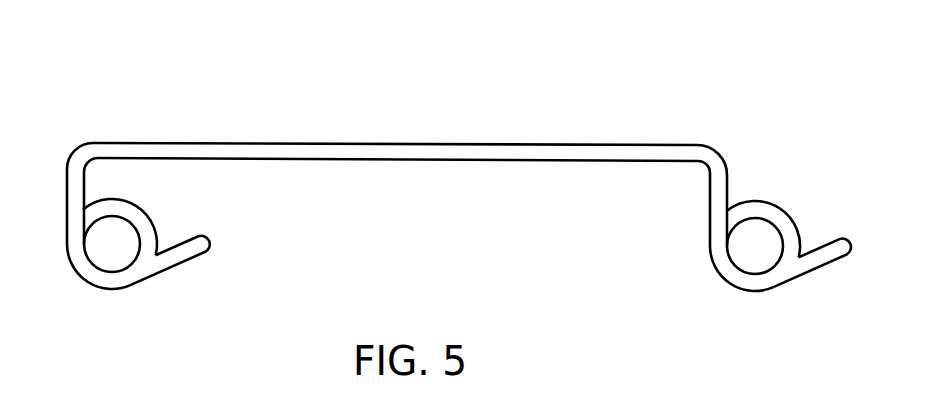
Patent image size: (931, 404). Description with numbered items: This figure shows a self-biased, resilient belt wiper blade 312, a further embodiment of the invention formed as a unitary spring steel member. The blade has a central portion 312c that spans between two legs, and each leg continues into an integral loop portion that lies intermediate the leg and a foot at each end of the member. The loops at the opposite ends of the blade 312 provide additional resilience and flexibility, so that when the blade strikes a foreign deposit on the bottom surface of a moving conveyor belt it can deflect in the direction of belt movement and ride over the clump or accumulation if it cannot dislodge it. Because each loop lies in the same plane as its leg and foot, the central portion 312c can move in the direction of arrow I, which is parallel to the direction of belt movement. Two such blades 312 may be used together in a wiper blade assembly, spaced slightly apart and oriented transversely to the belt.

The self-biased, resilient belt wiper blade 312 is at (467, 197).
The central portion 312c is at (457, 161).
The arrow I is at (393, 167).